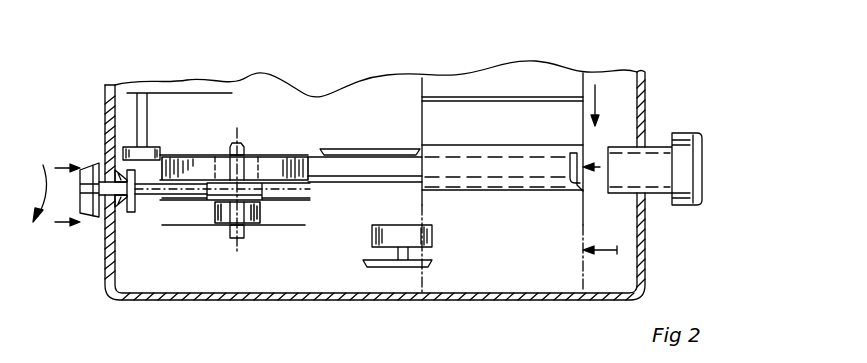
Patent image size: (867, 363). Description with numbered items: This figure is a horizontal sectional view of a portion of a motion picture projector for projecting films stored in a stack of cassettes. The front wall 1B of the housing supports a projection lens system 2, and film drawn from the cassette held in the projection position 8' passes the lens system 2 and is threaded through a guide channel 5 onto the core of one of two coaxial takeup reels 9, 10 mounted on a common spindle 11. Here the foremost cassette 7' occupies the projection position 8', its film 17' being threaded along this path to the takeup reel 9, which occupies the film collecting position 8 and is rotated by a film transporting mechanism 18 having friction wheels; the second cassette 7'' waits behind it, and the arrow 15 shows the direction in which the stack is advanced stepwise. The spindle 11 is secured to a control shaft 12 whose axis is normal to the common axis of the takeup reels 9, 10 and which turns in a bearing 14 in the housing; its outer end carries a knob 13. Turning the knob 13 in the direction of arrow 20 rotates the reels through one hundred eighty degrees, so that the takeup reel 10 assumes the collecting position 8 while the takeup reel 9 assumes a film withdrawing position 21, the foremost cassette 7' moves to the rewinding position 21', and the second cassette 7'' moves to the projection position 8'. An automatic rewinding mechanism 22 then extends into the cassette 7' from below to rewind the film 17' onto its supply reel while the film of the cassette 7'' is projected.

The front wall 1B is at (645, 95).
The projection lens system 2 is at (685, 173).
The guide channel 5 is at (349, 148).
The foremost cassette 7' is at (593, 184).
The second cassette 7'' is at (521, 163).
The film collecting position 8 is at (63, 154).
The projection position 8' is at (603, 144).
The takeup reel 9 is at (292, 155).
The takeup reel 10 is at (287, 227).
The spindle 11 is at (242, 145).
The control shaft 12 is at (167, 189).
The knob 13 is at (88, 208).
The bearing 14 is at (112, 222).
The arrow 15 is at (598, 92).
The film 17' is at (445, 143).
The film transporting mechanism 18 is at (146, 131).
The arrow 20 is at (47, 188).
The film withdrawing position 21 is at (65, 211).
The rewinding position 21' is at (604, 265).
The automatic rewinding mechanism 22 is at (375, 240).